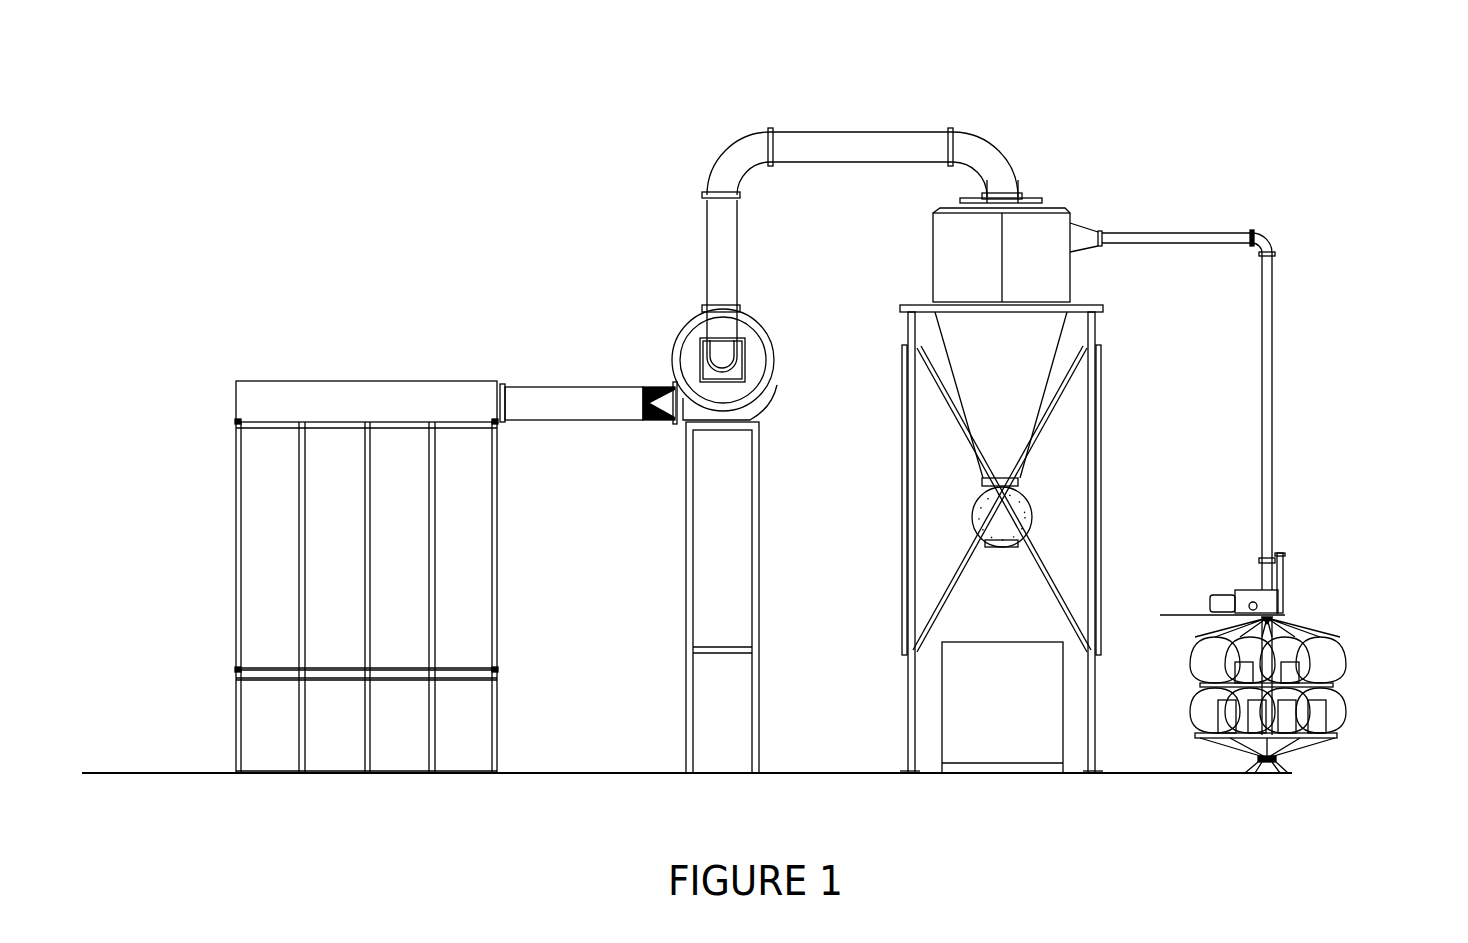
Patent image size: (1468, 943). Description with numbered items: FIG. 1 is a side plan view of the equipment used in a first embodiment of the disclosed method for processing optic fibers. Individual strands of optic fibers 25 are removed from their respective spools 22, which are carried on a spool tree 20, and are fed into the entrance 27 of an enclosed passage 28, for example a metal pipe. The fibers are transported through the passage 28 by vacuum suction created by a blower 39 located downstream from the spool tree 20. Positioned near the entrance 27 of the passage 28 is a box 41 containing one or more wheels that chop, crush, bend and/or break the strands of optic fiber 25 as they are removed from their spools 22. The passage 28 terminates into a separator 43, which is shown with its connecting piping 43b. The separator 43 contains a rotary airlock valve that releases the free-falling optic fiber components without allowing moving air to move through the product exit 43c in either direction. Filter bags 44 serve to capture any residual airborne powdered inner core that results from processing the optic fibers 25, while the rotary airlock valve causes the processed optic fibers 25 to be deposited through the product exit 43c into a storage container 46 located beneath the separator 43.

The spool tree 20 is at (1324, 661).
The spools 22 is at (1313, 713).
The optic fibers 25 is at (1287, 623).
The entrance 27 is at (1280, 617).
The enclosed passage 28 is at (728, 143).
The blower 39 is at (677, 345).
The box 41 is at (1255, 590).
The separator 43 is at (1052, 207).
The cyclone inlet/outlet pipe 43b is at (1000, 200).
The product exit 43c is at (1005, 550).
The filter bags 44 is at (280, 563).
The storage container 46 is at (1002, 707).